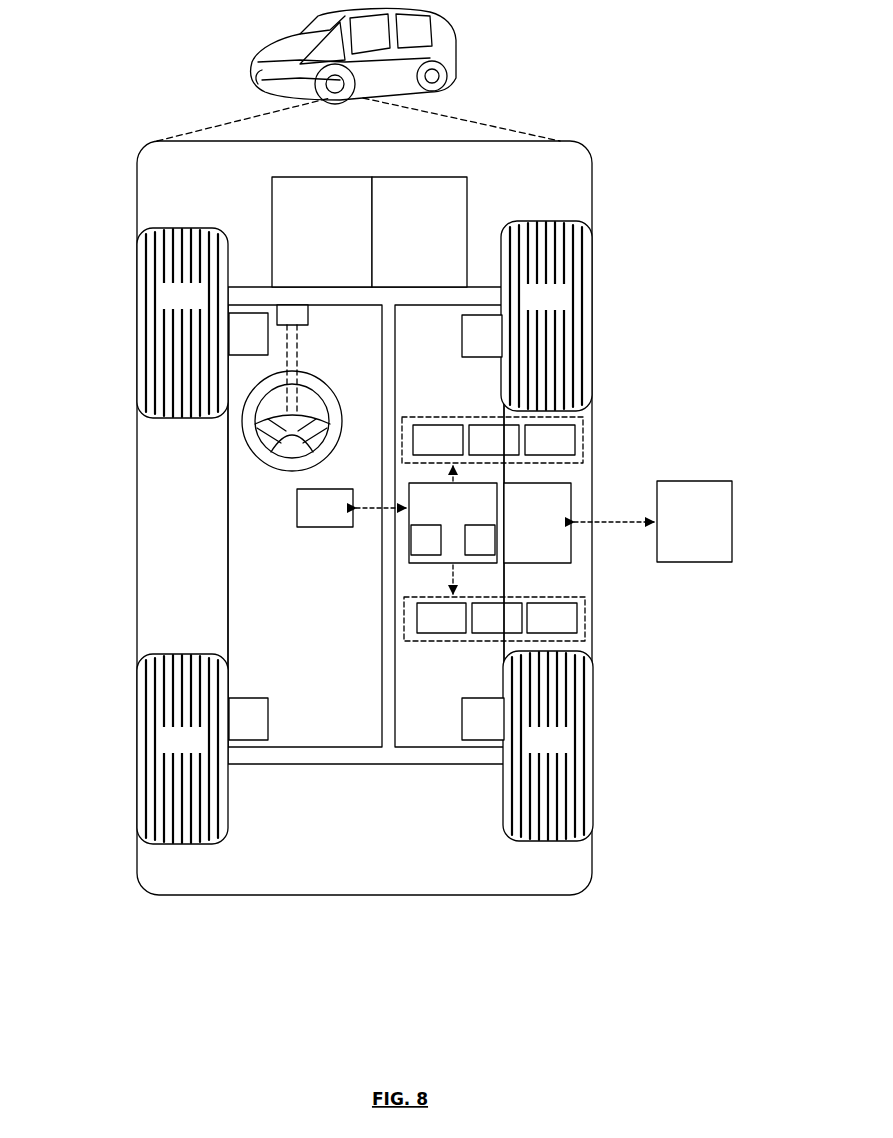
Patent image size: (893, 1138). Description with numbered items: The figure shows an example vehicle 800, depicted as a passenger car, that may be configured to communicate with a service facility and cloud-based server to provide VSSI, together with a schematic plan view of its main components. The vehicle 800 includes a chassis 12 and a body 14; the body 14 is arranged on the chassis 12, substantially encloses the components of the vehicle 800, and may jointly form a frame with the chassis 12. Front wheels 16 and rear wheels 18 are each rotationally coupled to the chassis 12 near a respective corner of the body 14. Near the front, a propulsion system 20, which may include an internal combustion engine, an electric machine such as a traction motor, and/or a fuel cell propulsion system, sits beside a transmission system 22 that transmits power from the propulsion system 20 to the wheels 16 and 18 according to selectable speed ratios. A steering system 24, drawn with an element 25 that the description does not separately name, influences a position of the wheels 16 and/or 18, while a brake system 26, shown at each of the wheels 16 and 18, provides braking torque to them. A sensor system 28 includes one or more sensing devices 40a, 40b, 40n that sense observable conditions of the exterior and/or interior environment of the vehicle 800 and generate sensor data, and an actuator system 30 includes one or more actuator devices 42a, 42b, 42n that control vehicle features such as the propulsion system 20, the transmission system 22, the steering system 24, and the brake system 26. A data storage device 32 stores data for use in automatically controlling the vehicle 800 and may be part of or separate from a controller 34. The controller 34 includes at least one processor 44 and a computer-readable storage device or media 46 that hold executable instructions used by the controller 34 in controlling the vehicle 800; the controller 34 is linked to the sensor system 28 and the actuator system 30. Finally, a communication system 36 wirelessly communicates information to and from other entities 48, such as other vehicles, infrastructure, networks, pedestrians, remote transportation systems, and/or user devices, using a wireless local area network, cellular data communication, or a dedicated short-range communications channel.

The vehicle 800 is at (240, 52).
The chassis 12 is at (392, 765).
The body 14 is at (136, 482).
The front wheels 16 is at (364, 319).
The rear wheels 18 is at (365, 747).
The propulsion system 20 is at (322, 232).
The transmission system 22 is at (419, 232).
The steering system 24 is at (272, 403).
The steering wheel 25 is at (324, 383).
The brake system 26 is at (366, 526).
The sensor system 28 is at (492, 417).
The actuator system 30 is at (494, 640).
The data storage device 32 is at (325, 508).
The controller 34 is at (453, 523).
The communication system 36 is at (537, 523).
The sensing device 40a is at (438, 440).
The sensing device 40b is at (494, 440).
The sensing device 40n is at (550, 440).
The actuator device 42a is at (441, 618).
The actuator device 42b is at (497, 618).
The actuator device 42n is at (552, 618).
The processor 44 is at (426, 540).
The computer-readable storage device or media 46 is at (480, 540).
The other entities 48 is at (694, 521).